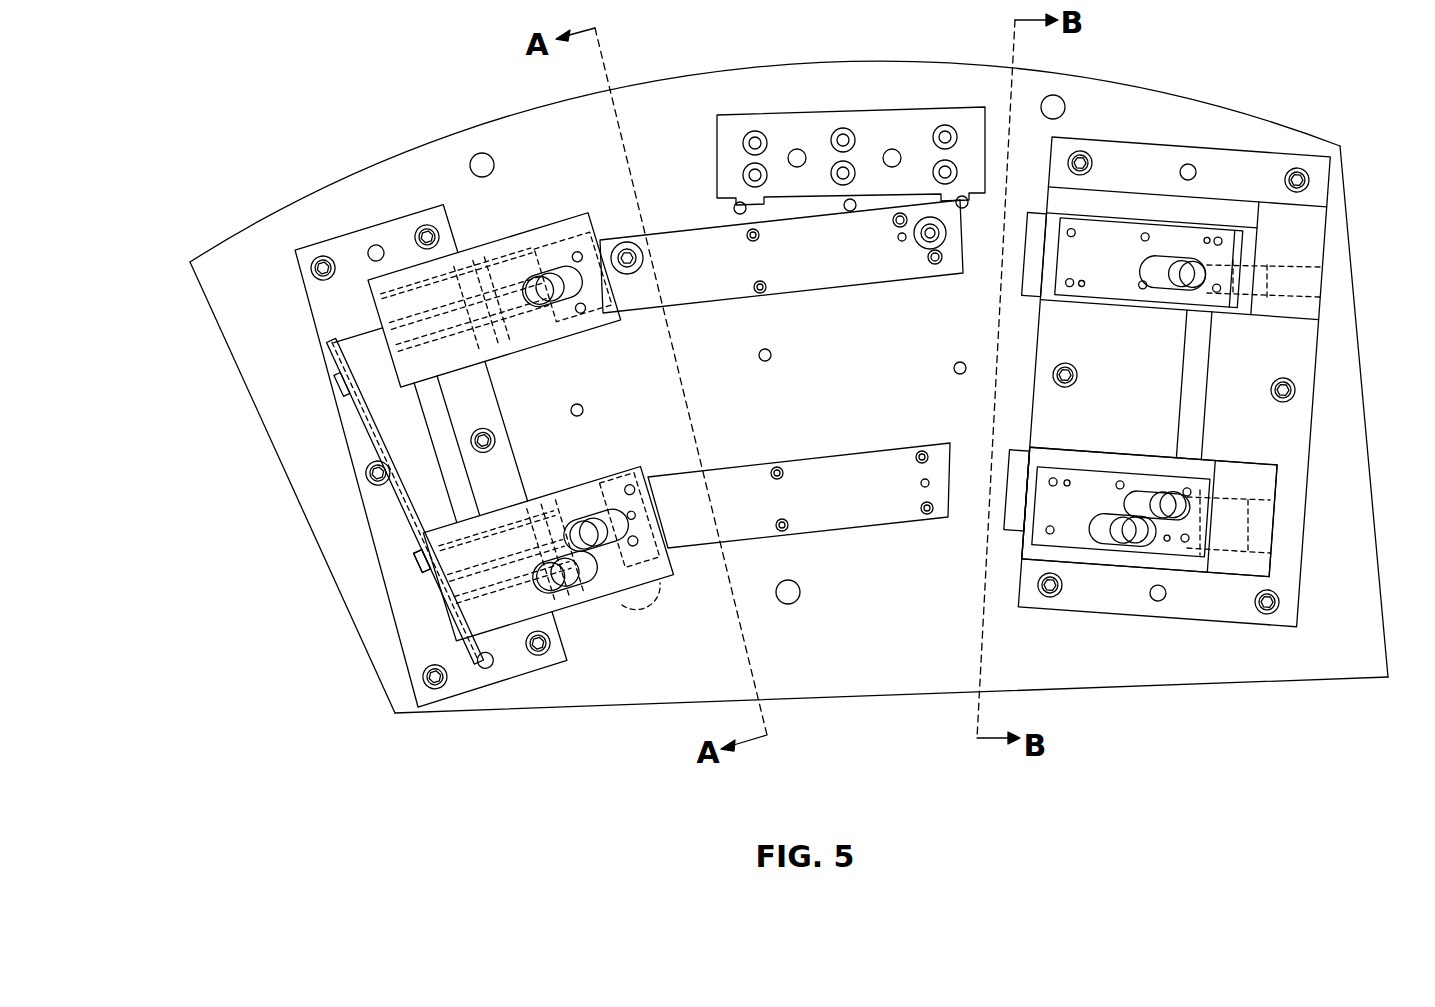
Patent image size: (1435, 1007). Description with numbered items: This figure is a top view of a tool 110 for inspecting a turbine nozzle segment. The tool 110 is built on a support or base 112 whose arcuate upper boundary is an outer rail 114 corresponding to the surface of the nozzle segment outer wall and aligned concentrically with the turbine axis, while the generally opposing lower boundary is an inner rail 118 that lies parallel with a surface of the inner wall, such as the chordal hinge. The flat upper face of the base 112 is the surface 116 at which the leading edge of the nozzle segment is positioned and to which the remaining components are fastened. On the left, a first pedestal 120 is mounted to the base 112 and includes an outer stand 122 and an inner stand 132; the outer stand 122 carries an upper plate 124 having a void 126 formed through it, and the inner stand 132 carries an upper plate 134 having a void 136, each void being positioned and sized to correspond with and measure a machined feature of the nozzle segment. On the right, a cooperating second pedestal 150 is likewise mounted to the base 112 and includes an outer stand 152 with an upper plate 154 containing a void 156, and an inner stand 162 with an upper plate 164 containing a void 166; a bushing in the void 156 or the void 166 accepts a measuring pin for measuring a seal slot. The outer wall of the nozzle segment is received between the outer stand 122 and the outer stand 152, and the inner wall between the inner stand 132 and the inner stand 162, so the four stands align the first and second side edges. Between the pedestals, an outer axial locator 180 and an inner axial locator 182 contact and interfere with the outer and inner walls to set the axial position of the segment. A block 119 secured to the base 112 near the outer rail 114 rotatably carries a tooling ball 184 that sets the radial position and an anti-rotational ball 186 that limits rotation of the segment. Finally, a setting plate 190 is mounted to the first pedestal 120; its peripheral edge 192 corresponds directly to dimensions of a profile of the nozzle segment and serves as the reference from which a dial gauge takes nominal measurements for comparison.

The tool 110 is at (237, 120).
The base 112 is at (1222, 677).
The outer rail 114 is at (728, 70).
The surface 116 is at (808, 402).
The inner rail 118 is at (520, 713).
The block 119 is at (893, 118).
The first pedestal 120 is at (330, 305).
The outer stand 122 is at (510, 250).
The upper plate 124 is at (640, 292).
The void 126 is at (591, 212).
The inner stand 132 is at (643, 570).
The upper plate 134 is at (660, 487).
The void 136 is at (640, 610).
The second pedestal 150 is at (1322, 193).
The outer stand 152 is at (1318, 245).
The upper plate 154 is at (1100, 225).
The void 156 is at (1147, 273).
The inner stand 162 is at (1078, 482).
The upper plate 164 is at (1063, 537).
The void 166 is at (1142, 497).
The outer axial locator 180 is at (833, 280).
The inner axial locator 182 is at (866, 515).
The tooling ball 184 is at (734, 208).
The anti-rotational ball 186 is at (850, 211).
The setting plate 190 is at (363, 420).
The peripheral edge 192 is at (403, 502).